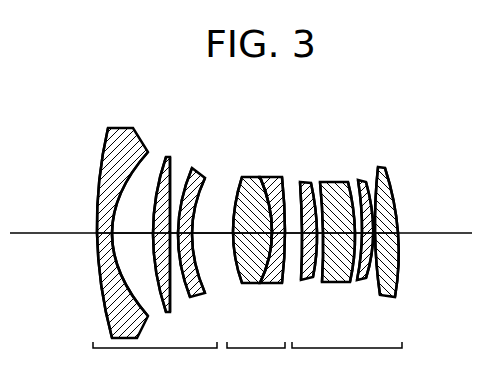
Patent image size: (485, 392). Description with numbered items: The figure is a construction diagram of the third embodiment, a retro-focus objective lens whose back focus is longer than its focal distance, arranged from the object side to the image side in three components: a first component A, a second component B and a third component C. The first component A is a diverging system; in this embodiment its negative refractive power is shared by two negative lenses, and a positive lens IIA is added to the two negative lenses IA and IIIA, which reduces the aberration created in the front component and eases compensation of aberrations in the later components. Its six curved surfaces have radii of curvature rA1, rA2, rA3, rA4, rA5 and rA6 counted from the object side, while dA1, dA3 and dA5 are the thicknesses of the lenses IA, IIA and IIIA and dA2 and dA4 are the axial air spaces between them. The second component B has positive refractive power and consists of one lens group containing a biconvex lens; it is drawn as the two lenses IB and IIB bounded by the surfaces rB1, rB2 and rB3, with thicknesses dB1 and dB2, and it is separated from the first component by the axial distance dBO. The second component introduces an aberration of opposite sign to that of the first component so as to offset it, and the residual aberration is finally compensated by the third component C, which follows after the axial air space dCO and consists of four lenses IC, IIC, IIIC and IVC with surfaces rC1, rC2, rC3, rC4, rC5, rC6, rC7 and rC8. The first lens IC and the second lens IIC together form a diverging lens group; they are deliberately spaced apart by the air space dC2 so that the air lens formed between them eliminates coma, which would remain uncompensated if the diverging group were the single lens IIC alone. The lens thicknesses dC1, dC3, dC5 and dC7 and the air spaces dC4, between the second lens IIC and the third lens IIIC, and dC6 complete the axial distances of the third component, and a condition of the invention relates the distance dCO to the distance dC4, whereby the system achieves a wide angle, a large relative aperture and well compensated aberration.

The first component A is at (155, 357).
The second component B is at (256, 357).
The third component C is at (347, 357).
The negative lens IA is at (112, 318).
The positive lens IIA is at (163, 306).
The third lens element of group A IIIA is at (208, 296).
The first lens element of group B IB is at (236, 268).
The second lens element of group B IIB is at (281, 285).
The first lens of third component IC is at (295, 310).
The second lens of third component IIC is at (321, 319).
The third lens of third component IIIC is at (357, 319).
The fourth lens element of group C IVC is at (400, 319).
The radius of curvature of first surface of first component rA1 is at (103, 158).
The radius of curvature of second surface of first component rA2 is at (143, 139).
The radius of curvature of third surface of first component rA3 is at (157, 157).
The radius of curvature of fourth surface of first component rA4 is at (169, 155).
The radius of curvature of fifth surface of first component rA5 is at (192, 170).
The radius of curvature of sixth surface of first component rA6 is at (206, 173).
The radius of curvature of first surface of second component rB1 is at (236, 204).
The radius of curvature of second surface of second component rB2 is at (261, 178).
The radius of curvature of third surface of second component rB3 is at (276, 178).
The radius of curvature of first surface of third component rC1 is at (293, 160).
The radius of curvature of second surface of third component rC2 is at (301, 181).
The radius of curvature of third surface of third component rC3 is at (323, 182).
The radius of curvature of fourth surface of third component rC4 is at (348, 181).
The radius of curvature of fifth surface of third component rC5 is at (357, 180).
The radius of curvature of sixth surface of third component rC6 is at (366, 182).
The radius of curvature of seventh surface of third component rC7 is at (374, 222).
The radius of curvature of eighth surface of third component rC8 is at (386, 170).
The lens thickness of first component dA1 is at (97, 240).
The axial distance in first component dA2 is at (112, 226).
The lens thickness of first component dA3 is at (155, 237).
The axial distance in first component dA4 is at (173, 233).
The lens thickness of first component dA5 is at (186, 238).
The axial distance preceding second component dBO is at (212, 222).
The lens thickness of second component dB1 is at (253, 223).
The lens thickness of second component dB2 is at (283, 284).
The axial distance preceding third component dCO is at (289, 233).
The lens thickness of third component dC1 is at (370, 190).
The axial distance in third component dC2 is at (330, 280).
The lens thickness of third component dC3 is at (352, 200).
The axial distance in third component dC4 is at (380, 293).
The lens thickness of third component dC5 is at (378, 212).
The axial distance in third component dC6 is at (388, 268).
The lens thickness of third component dC7 is at (394, 246).